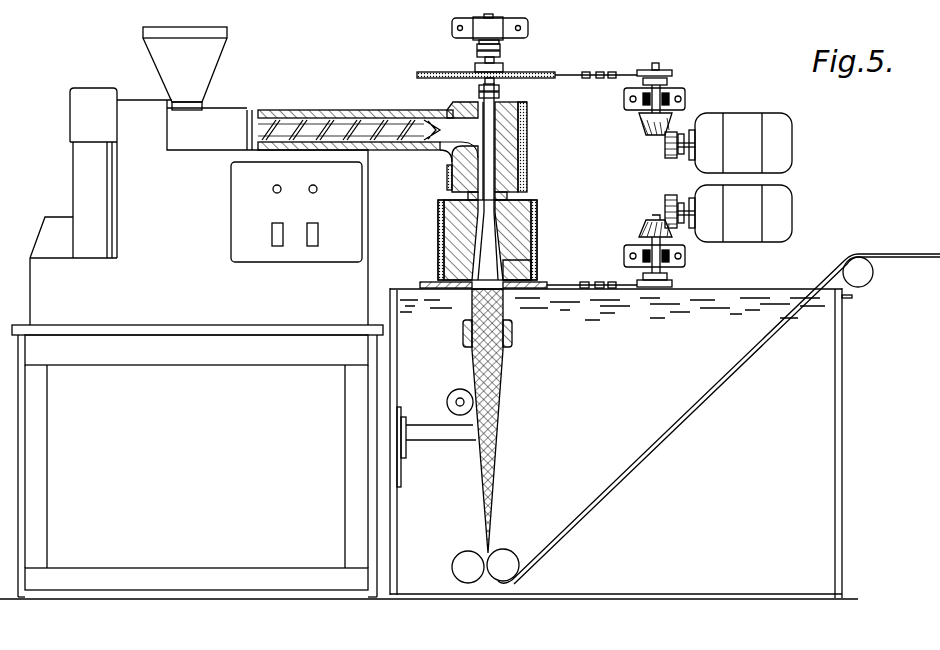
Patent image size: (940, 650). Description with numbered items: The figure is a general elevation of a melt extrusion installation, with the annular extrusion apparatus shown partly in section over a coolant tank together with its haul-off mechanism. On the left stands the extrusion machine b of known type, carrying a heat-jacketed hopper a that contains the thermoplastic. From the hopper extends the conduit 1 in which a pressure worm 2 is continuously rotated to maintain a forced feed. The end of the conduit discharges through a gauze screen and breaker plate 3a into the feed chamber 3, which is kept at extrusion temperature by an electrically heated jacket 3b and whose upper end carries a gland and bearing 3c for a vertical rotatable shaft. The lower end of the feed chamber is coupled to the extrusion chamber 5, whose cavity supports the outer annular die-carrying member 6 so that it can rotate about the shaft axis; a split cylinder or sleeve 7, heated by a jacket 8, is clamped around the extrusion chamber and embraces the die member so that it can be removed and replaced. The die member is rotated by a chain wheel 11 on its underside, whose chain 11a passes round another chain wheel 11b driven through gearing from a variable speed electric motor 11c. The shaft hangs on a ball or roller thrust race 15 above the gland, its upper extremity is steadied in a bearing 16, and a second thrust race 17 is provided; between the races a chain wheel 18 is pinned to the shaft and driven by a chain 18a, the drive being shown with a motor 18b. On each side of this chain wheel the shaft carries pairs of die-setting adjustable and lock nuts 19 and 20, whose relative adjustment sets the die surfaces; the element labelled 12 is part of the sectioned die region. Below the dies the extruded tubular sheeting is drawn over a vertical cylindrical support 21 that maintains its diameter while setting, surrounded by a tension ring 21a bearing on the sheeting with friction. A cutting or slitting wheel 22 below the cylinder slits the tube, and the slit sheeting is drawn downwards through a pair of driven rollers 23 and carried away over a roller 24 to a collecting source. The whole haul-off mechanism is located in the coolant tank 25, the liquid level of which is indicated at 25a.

The hopper a is at (194, 73).
The extrusion machine b is at (178, 221).
The conduit 1 is at (308, 110).
The pressure worm 2 is at (358, 128).
The feed chamber 3 is at (527, 137).
The gauze screen and breaker plate 3a is at (452, 150).
The electrically heated jacket 3b is at (527, 163).
The gland and bearing 3c is at (527, 114).
The extrusion chamber 5 is at (537, 212).
The outer annular die-carrying member 6 is at (537, 264).
The split cylinder or sleeve 7 is at (438, 212).
The heating jacket 8 is at (537, 230).
The chain wheel 11 is at (420, 282).
The chain 11a is at (588, 282).
The chain wheel 11b is at (680, 282).
The variable speed electric motor 11c is at (775, 213).
The die bore 12 is at (482, 252).
The ball or roller thrust race 15 is at (497, 99).
The bearing 16 is at (473, 26).
The second thrust race 17 is at (499, 42).
The chain wheel 18 is at (420, 73).
The chain 18a is at (595, 62).
The motor 18b is at (735, 130).
The die-setting adjustable and lock nuts 19 is at (477, 50).
The die-setting adjustable and lock nuts 20 is at (479, 90).
The vertical cylindrical support 21 is at (503, 368).
The tension ring 21a is at (512, 332).
The cutting or slitting wheel 22 is at (452, 393).
The pair of rollers 23 is at (506, 560).
The roller 24 is at (866, 275).
The coolant tank 25 is at (843, 355).
The liquid level 25a is at (760, 294).